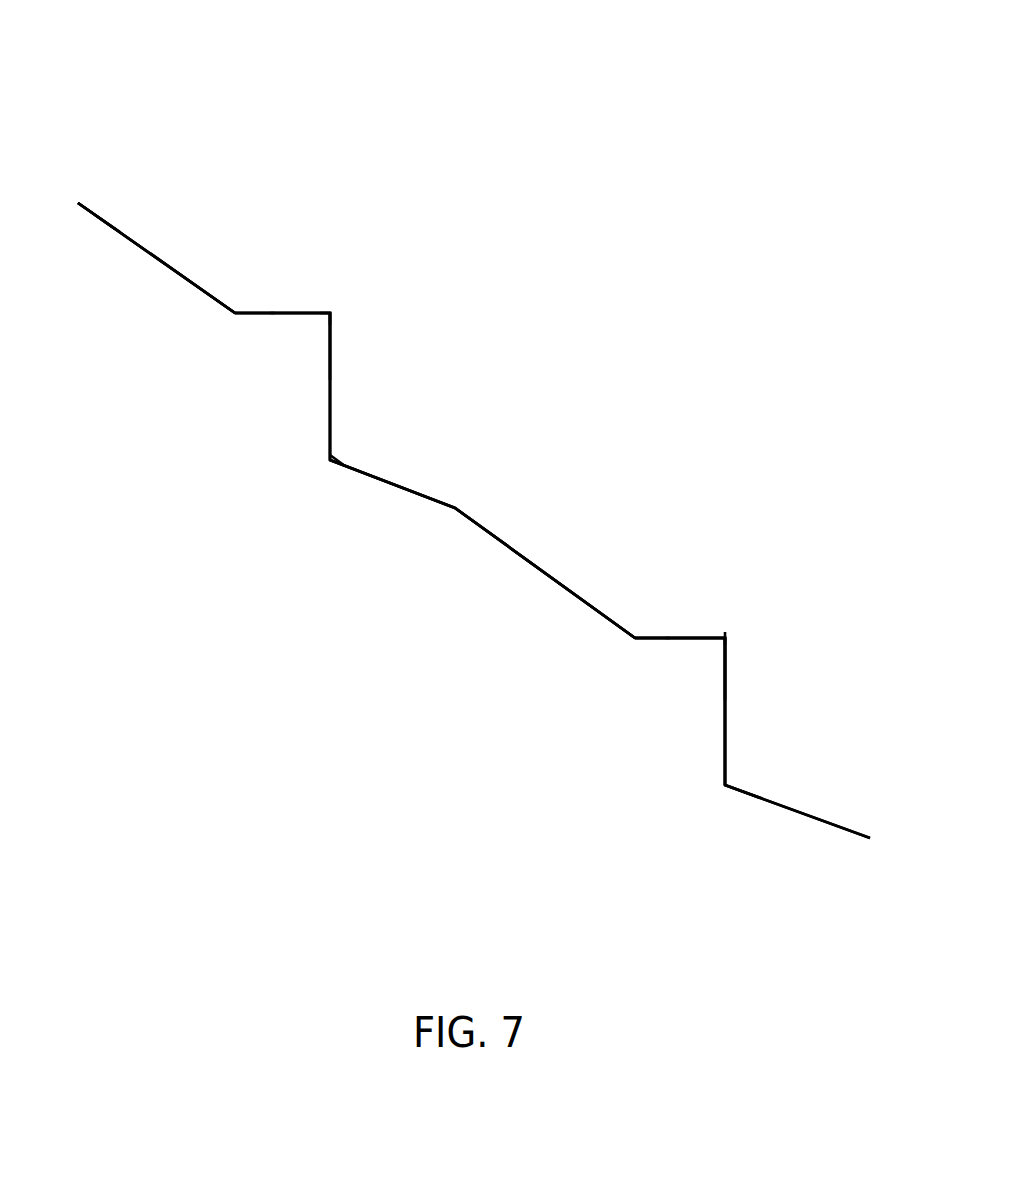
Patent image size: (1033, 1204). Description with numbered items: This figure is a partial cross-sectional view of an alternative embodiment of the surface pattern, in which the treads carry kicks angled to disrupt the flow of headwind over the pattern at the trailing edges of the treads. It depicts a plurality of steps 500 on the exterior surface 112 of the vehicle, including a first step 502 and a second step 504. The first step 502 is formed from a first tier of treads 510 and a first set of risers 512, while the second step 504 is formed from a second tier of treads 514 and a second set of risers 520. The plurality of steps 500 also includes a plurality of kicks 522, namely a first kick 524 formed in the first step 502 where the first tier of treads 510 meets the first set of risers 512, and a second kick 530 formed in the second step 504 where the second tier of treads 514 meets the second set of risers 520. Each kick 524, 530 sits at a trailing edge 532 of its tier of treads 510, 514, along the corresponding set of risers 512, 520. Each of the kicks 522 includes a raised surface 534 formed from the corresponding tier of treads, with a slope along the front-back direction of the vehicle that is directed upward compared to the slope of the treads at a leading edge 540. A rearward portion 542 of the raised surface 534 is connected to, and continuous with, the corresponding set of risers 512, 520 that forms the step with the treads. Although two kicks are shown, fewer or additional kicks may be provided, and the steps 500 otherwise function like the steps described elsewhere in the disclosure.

The exterior surface 112 is at (98, 213).
The plurality of steps 500 is at (667, 250).
The first step 502 is at (159, 383).
The second step 504 is at (533, 648).
The first tier of treads 510 is at (182, 272).
The first set of risers 512 is at (330, 392).
The second tier of treads 514 is at (515, 547).
The second set of risers 520 is at (725, 720).
The plurality of kicks 522 is at (697, 287).
The first kick 524 is at (285, 357).
The second kick 530 is at (683, 675).
The trailing edge 532 is at (257, 313).
The raised surface 534 is at (287, 313).
The leading edge 540 is at (105, 215).
The rearward portion 542 is at (331, 316).